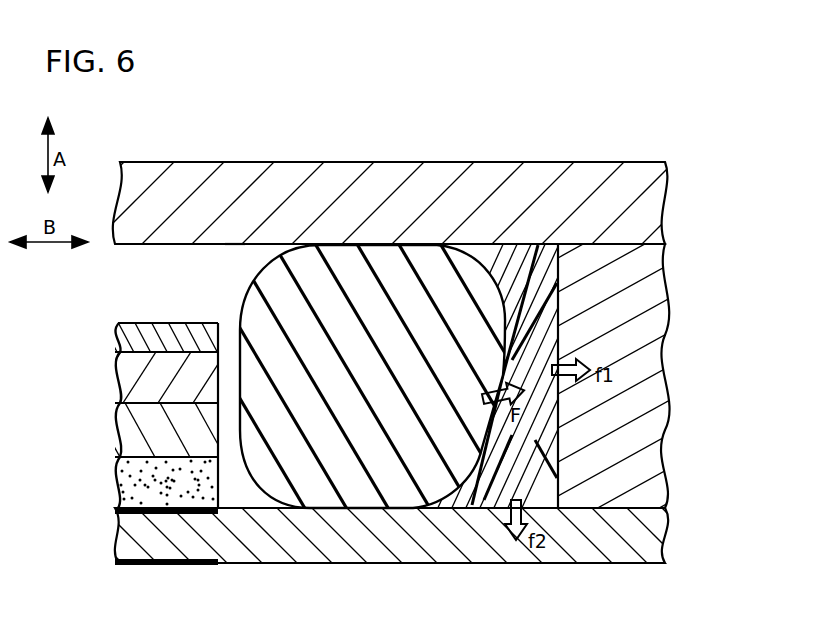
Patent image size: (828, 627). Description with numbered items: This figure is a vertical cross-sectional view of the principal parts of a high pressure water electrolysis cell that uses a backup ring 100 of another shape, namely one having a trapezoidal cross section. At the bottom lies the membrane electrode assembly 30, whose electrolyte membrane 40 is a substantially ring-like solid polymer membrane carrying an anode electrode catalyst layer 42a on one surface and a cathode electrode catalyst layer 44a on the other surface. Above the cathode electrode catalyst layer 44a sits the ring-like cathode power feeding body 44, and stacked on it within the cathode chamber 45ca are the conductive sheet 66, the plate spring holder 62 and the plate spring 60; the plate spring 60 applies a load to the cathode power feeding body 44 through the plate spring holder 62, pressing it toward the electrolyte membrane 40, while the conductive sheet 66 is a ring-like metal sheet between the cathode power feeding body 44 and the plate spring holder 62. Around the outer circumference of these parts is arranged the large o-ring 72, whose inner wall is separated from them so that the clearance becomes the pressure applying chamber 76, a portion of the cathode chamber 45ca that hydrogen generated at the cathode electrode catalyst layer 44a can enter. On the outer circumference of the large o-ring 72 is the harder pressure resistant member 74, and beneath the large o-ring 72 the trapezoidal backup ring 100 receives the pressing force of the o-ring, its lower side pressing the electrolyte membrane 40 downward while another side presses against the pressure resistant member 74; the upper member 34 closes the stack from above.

The housing plate 34 is at (631, 158).
The cathode chamber 45ca is at (235, 266).
The large o-ring 72 is at (360, 280).
The pressure resistant member 74 is at (655, 325).
The backup ring 100 is at (530, 453).
The membrane electrode assembly 30 is at (652, 540).
The plate spring 60 is at (140, 340).
The plate spring holder 62 is at (138, 375).
The conductive sheet 66 is at (138, 428).
The cathode power feeding body 44 is at (140, 482).
The cathode electrode catalyst layer 44a is at (112, 497).
The electrolyte membrane 40 is at (140, 533).
The anode electrode catalyst layer 42a is at (138, 565).
The pressure applying chamber 76 is at (236, 497).